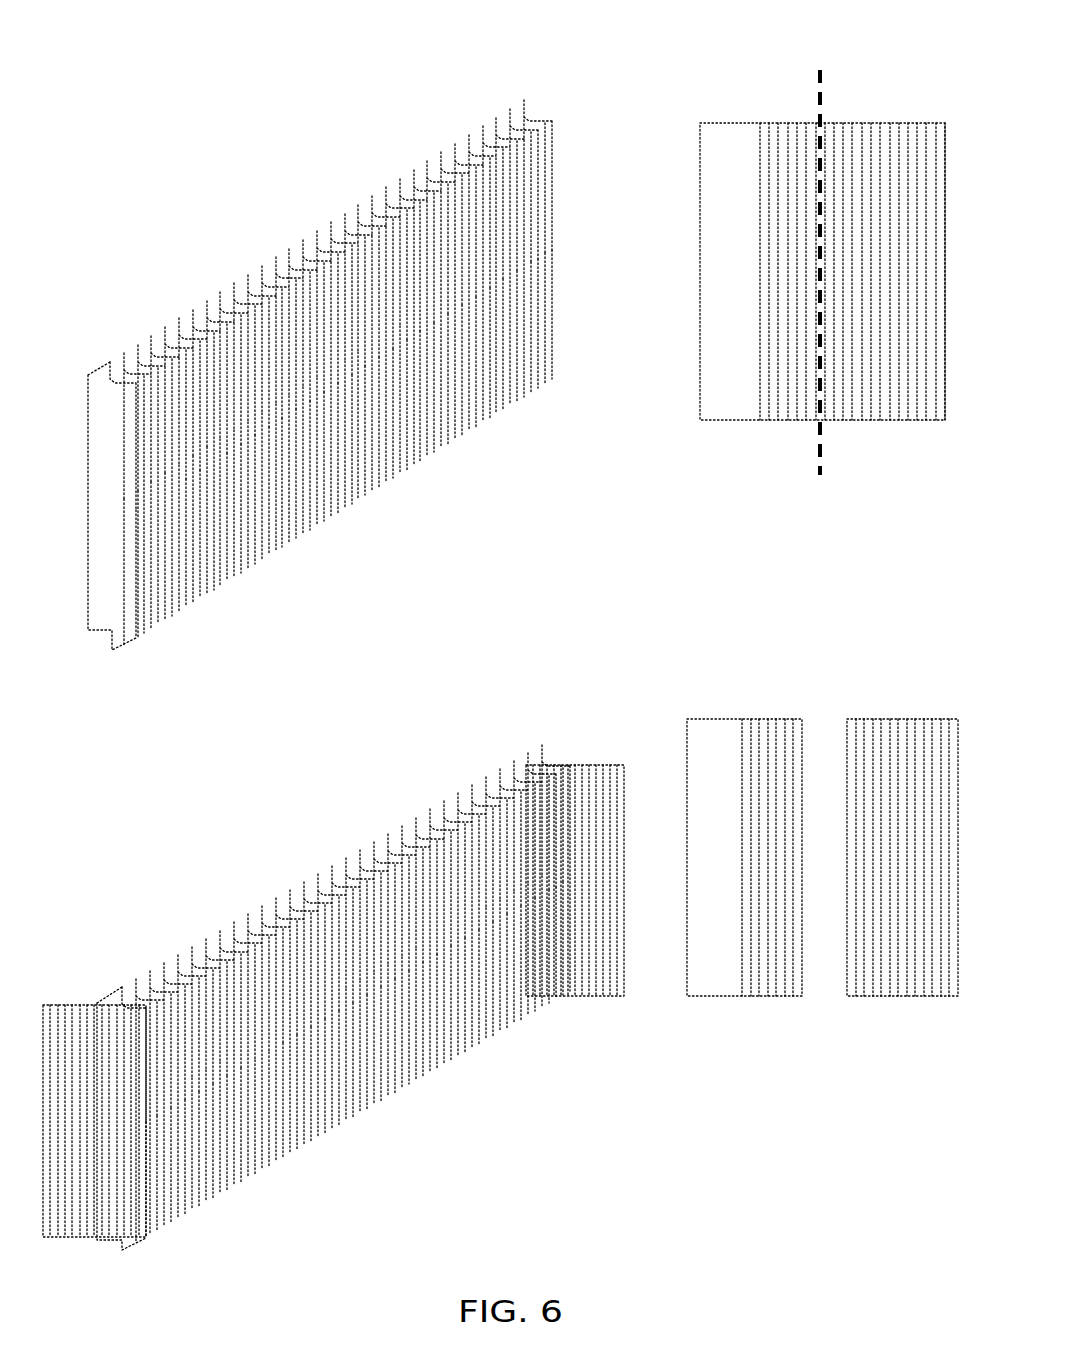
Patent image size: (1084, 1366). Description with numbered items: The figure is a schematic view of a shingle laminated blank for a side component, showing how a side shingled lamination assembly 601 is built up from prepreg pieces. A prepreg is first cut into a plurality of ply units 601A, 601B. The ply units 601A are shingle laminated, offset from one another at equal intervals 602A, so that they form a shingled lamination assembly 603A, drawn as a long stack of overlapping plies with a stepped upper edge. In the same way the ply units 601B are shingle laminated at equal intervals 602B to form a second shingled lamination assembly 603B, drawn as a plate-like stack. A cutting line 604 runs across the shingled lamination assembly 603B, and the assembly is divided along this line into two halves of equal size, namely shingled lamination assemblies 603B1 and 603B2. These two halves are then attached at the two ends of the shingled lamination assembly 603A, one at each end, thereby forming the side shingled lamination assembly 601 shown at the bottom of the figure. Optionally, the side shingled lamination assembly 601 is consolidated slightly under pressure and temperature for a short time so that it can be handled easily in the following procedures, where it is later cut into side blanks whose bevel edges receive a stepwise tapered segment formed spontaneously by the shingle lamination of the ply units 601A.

The side shingled lamination assembly 601 is at (205, 885).
The ply unit 601A is at (98, 620).
The ply unit 601B is at (771, 211).
The equal interval 602A is at (237, 567).
The equal interval 602B is at (780, 125).
The shingled lamination assembly 603A is at (297, 198).
The shingled lamination assembly 603B is at (870, 100).
The shingled lamination assembly 603B1 is at (577, 962).
The shingled lamination assembly 603B2 is at (73, 1213).
The cutting line 604 is at (817, 451).